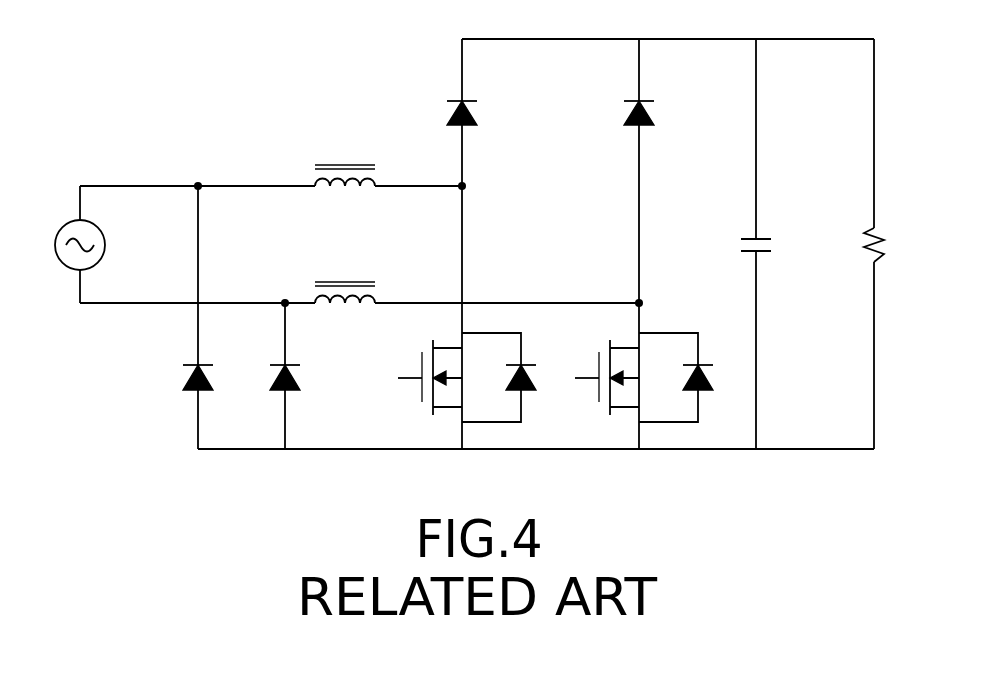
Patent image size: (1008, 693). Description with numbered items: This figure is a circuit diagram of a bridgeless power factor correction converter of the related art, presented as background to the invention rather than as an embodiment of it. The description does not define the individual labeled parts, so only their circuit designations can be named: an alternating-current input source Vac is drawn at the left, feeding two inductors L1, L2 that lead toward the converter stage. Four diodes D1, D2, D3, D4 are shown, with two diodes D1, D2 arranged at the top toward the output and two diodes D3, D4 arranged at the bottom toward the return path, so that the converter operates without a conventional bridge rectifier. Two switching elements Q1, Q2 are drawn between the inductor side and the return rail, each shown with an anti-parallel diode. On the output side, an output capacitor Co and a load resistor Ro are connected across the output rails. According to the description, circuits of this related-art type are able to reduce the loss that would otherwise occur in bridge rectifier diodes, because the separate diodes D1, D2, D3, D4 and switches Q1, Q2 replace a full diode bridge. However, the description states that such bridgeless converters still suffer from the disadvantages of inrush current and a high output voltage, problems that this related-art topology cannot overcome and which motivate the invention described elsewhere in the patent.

The AC input voltage source Vac is at (56, 245).
The first boost inductor L1 is at (345, 194).
The second boost inductor L2 is at (345, 311).
The first boost diode D1 is at (480, 114).
The second boost diode D2 is at (657, 114).
The first return diode D3 is at (216, 379).
The second return diode D4 is at (303, 379).
The first switching transistor (MOSFET with body diode) Q1 is at (463, 365).
The second switching transistor (MOSFET with body diode) Q2 is at (639, 365).
The output capacitor Co is at (776, 245).
The output load resistor Ro is at (893, 245).